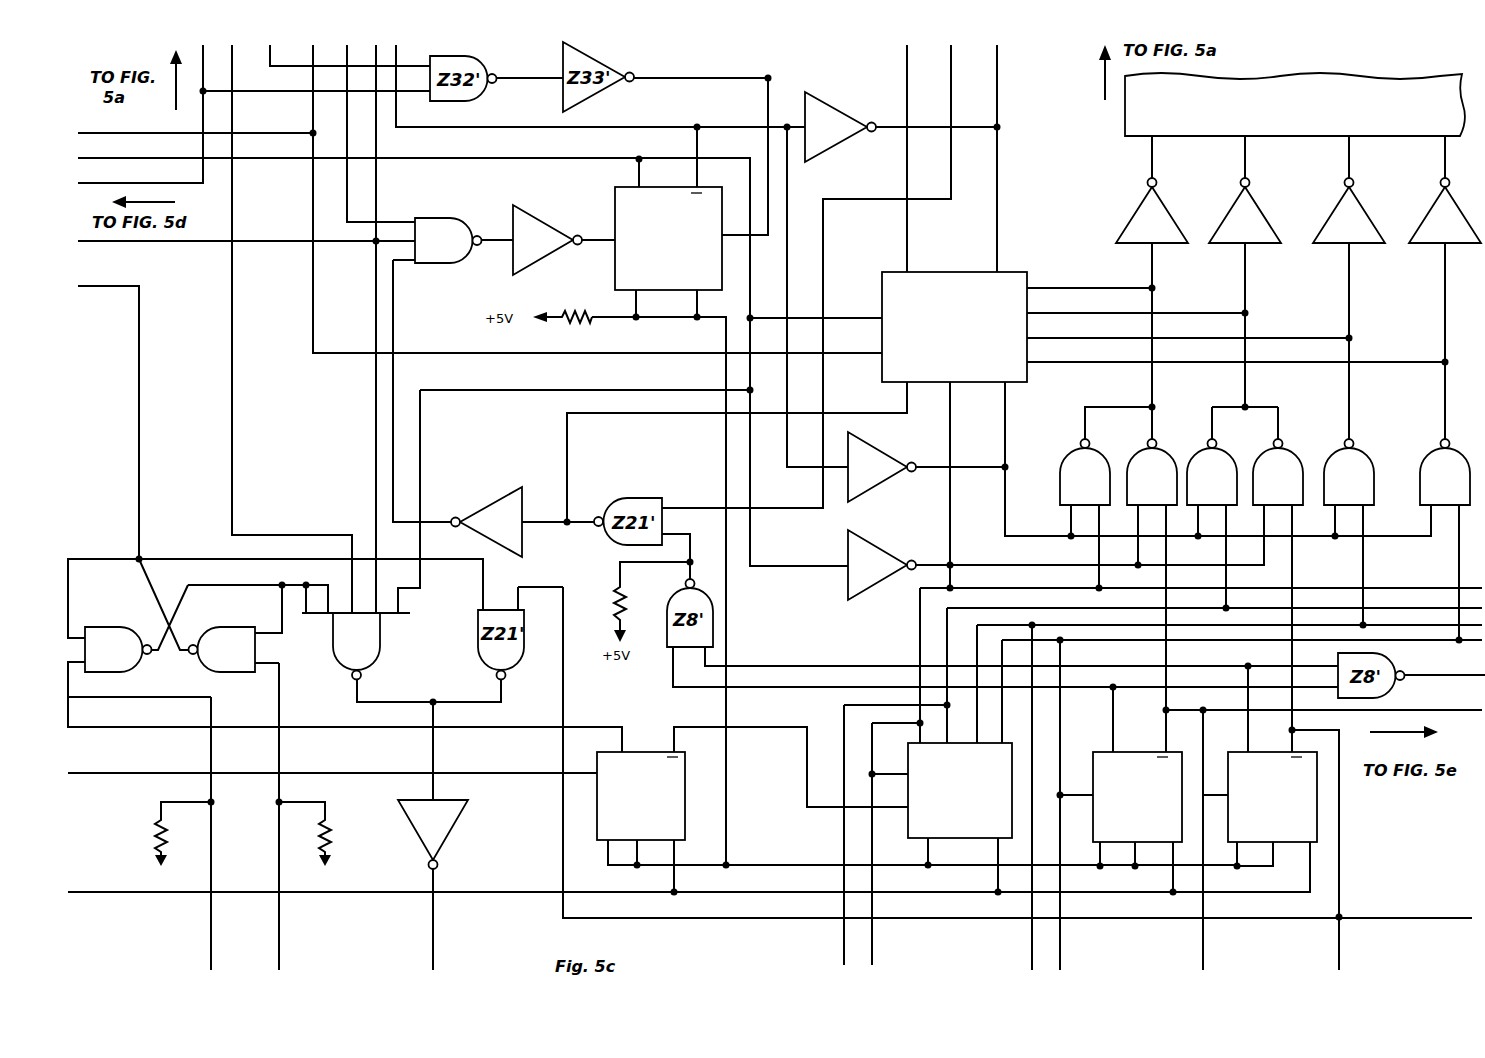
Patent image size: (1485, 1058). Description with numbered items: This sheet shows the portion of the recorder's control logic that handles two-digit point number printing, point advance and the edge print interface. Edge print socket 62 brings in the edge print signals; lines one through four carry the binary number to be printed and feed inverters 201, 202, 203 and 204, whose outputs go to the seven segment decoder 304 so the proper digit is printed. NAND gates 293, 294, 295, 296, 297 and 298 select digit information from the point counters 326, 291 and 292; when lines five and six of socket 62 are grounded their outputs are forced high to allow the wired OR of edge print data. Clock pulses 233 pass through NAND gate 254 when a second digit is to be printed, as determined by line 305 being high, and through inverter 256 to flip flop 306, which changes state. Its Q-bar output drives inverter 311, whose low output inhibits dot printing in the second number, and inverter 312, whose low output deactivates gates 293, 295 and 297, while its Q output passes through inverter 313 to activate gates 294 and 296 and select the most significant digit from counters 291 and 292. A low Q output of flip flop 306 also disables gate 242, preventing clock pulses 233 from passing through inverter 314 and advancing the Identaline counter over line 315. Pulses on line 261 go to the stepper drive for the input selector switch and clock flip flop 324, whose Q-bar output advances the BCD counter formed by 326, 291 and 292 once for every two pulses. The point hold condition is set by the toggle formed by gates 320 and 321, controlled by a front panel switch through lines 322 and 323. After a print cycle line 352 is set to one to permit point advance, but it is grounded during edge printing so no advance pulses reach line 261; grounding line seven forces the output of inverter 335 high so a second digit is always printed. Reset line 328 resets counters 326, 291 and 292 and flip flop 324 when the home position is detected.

The line 352 is at (311, 114).
The clock pulses 233 is at (268, 244).
The NAND gate 254 is at (466, 223).
The inverter 256 is at (545, 214).
The flip flop 306 is at (613, 277).
The line 305 is at (395, 327).
The inverter 311 is at (833, 100).
The 7 segment decoder 304 is at (1122, 127).
The edge print socket 62 is at (1022, 268).
The inverter 201 is at (1165, 200).
The inverter 202 is at (1260, 200).
The inverter 203 is at (1360, 200).
The inverter 204 is at (1433, 248).
The NAND gate 293 is at (1068, 448).
The NAND gate 294 is at (1139, 445).
The NAND gate 295 is at (1224, 446).
The NAND gate 296 is at (1292, 446).
The NAND gate 297 is at (1365, 446).
The NAND gate 298 is at (1438, 442).
The counter 291 is at (1093, 755).
The counter 292 is at (1228, 755).
The inverter 312 is at (873, 433).
The inverter 313 is at (880, 533).
The inverter 335 is at (488, 500).
The toggle gate 320 is at (118, 674).
The toggle gate 321 is at (240, 675).
The gate 242 is at (340, 672).
The line 261 is at (465, 773).
The inverter 314 is at (462, 830).
The line 315 is at (438, 932).
The line 322 is at (208, 932).
The line 323 is at (282, 928).
The flip flop 324 is at (596, 842).
The counter 326 is at (914, 830).
The reset line 328 is at (106, 892).